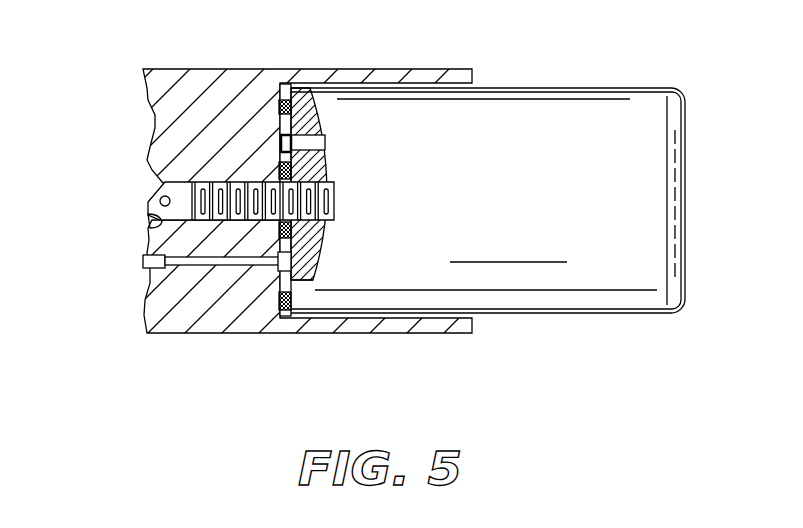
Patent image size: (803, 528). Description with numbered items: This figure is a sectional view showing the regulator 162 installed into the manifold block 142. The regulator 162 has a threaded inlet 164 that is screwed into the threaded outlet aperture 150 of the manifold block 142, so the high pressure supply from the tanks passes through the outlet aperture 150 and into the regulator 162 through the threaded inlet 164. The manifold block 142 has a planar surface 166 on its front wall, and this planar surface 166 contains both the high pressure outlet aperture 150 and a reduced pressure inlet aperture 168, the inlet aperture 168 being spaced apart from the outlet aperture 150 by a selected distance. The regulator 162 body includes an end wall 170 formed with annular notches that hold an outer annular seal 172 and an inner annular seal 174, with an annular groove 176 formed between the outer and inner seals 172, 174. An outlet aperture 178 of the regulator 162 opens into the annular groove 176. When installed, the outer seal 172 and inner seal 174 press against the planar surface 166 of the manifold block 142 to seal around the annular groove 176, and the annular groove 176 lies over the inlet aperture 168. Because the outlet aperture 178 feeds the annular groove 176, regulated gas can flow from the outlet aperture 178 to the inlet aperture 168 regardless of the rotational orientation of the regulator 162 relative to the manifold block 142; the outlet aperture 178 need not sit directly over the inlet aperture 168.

The manifold block 142 is at (253, 67).
The outlet aperture 150 is at (147, 210).
The regulator 162 is at (568, 135).
The threaded inlet 164 is at (263, 201).
The planar surface 166 is at (310, 281).
The inlet aperture 168 is at (145, 256).
The end wall 170 is at (280, 117).
The outer annular seal 172 is at (280, 282).
The inner annular seal 174 is at (326, 167).
The annular groove 176 is at (278, 294).
The outlet aperture 178 is at (310, 143).